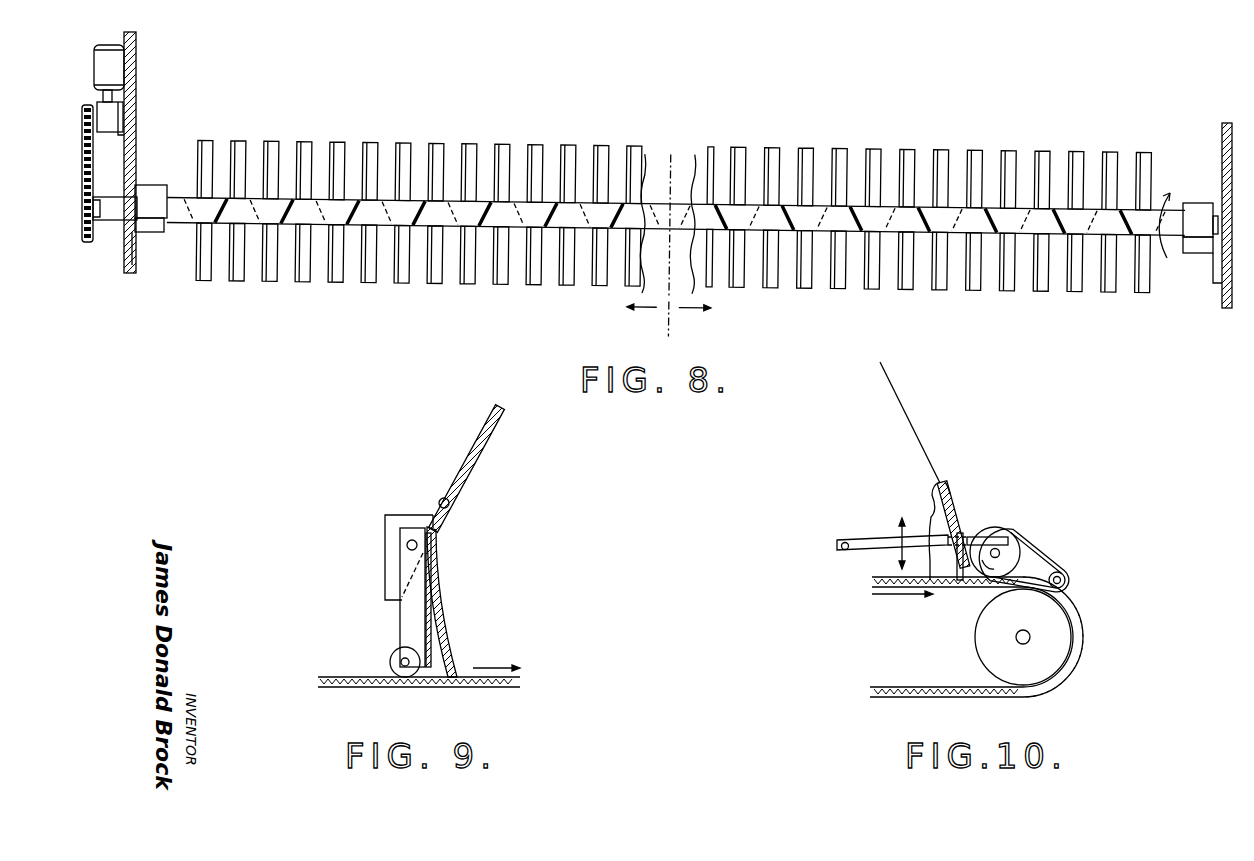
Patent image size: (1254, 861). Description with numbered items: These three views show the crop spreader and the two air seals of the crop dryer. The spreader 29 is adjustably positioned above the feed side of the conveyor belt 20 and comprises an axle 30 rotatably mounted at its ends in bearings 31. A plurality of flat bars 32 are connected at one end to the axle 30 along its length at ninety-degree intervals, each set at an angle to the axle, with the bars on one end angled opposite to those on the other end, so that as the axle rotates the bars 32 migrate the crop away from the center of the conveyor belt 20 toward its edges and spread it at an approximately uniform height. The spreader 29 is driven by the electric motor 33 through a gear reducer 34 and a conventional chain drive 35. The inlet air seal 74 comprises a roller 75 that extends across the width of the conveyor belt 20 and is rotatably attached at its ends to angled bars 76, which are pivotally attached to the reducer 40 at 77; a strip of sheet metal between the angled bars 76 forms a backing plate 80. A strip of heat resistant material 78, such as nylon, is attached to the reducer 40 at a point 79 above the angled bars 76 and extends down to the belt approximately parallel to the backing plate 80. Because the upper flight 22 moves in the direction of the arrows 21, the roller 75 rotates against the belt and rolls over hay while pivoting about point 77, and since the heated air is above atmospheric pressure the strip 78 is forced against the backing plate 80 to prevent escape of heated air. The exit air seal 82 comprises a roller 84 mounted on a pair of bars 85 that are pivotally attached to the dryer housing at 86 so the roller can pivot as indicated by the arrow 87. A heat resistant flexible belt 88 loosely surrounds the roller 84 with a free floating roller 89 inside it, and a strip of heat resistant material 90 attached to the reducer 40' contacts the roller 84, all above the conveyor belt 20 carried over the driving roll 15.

In FIG. 10, the driving roll 15 is at (1065, 633).
In FIG. 9, the conveyor belt 20 is at (462, 688).
In FIG. 10, the conveyor belt 20 is at (957, 592).
In FIG. 9, the arrows indicating direction of belt travel 21 is at (498, 668).
In FIG. 10, the arrows indicating direction of belt travel 21 is at (900, 594).
In FIG. 9, the upper flight of the conveyor belt 22 is at (350, 677).
In FIG. 8, the spreader 29 is at (675, 218).
In FIG. 8, the axle 30 is at (745, 203).
In FIG. 8, the bearings 31 is at (154, 187).
In FIG. 8, the flat bars 32 is at (315, 194).
In FIG. 8, the electric motor 33 is at (109, 48).
In FIG. 8, the gear reducer 34 is at (100, 108).
In FIG. 8, the chain drive 35 is at (84, 168).
In FIG. 9, the reducer 40 is at (467, 469).
In FIG. 10, the reducer 40' is at (930, 422).
In FIG. 9, the air seal 74 is at (370, 590).
In FIG. 9, the roller 75 is at (397, 657).
In FIG. 9, the angled bars 76 is at (400, 617).
In FIG. 9, the pivot point 77 is at (395, 535).
In FIG. 9, the strip of heat resistant material 78 is at (445, 582).
In FIG. 9, the attachment point 79 is at (444, 498).
In FIG. 9, the backing plate 80 is at (440, 620).
In FIG. 10, the air seal 82 is at (967, 488).
In FIG. 10, the roller 84 is at (1000, 533).
In FIG. 10, the bars 85 is at (887, 528).
In FIG. 10, the pivot point 86 is at (828, 529).
In FIG. 10, the arrow indicating pivoting 87 is at (900, 549).
In FIG. 10, the heat resistant flexible belt 88 is at (1034, 547).
In FIG. 10, the free floating roller 89 is at (1061, 571).
In FIG. 10, the strip of heat resistant material 90 is at (930, 513).